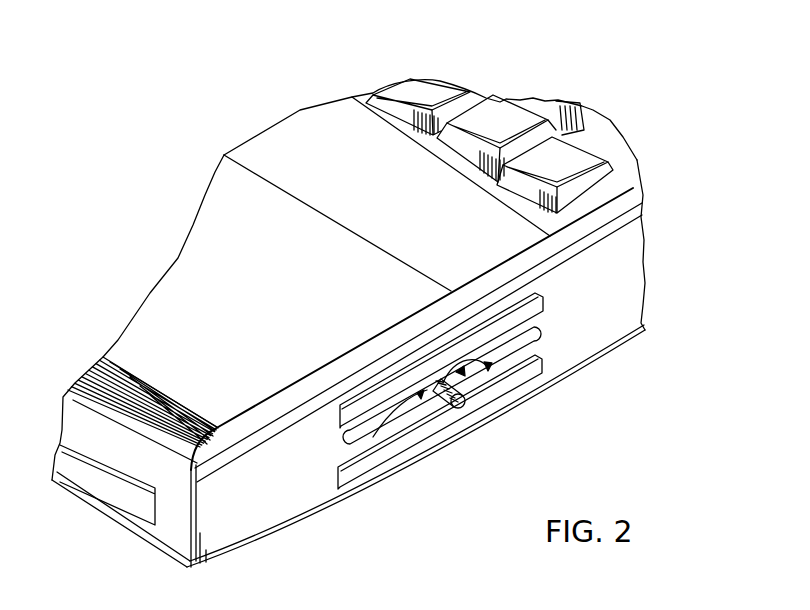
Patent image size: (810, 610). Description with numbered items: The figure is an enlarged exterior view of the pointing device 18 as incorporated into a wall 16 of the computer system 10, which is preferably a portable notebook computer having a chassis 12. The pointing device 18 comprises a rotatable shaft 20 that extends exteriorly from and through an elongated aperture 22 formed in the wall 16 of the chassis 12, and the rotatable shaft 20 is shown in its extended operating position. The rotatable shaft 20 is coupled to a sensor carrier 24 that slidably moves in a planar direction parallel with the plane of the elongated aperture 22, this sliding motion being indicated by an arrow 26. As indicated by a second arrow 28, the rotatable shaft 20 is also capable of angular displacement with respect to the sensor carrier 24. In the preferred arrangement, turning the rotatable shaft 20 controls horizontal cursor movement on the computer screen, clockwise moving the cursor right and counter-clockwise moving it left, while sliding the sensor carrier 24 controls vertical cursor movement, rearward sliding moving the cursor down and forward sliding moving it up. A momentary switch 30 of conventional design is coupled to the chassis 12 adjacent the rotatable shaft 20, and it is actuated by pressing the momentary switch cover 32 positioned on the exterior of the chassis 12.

The computer system 10 is at (325, 65).
The chassis 12 is at (645, 216).
The wall 16 is at (603, 330).
The pointing device 18 is at (453, 415).
The rotatable shaft 20 is at (466, 403).
The elongated aperture 22 is at (540, 325).
The sensor carrier 24 is at (360, 440).
The arrow 26 is at (502, 350).
The arrow 28 is at (420, 398).
The momentary switch 30 is at (411, 357).
The momentary switch cover 32 is at (453, 360).